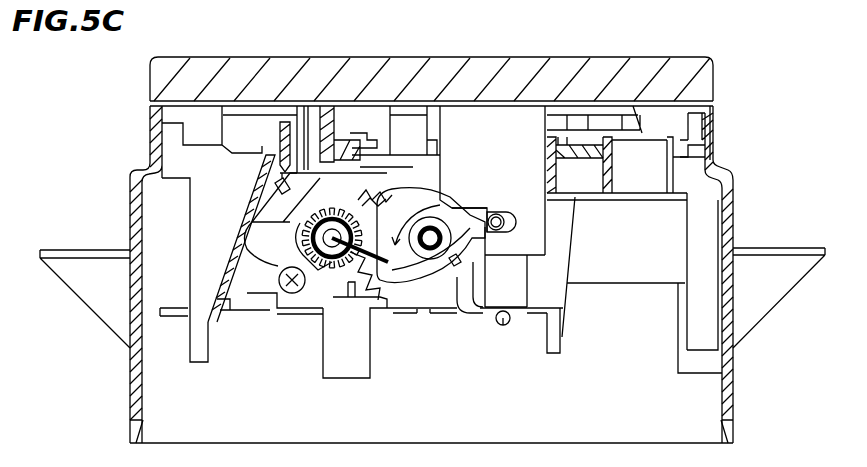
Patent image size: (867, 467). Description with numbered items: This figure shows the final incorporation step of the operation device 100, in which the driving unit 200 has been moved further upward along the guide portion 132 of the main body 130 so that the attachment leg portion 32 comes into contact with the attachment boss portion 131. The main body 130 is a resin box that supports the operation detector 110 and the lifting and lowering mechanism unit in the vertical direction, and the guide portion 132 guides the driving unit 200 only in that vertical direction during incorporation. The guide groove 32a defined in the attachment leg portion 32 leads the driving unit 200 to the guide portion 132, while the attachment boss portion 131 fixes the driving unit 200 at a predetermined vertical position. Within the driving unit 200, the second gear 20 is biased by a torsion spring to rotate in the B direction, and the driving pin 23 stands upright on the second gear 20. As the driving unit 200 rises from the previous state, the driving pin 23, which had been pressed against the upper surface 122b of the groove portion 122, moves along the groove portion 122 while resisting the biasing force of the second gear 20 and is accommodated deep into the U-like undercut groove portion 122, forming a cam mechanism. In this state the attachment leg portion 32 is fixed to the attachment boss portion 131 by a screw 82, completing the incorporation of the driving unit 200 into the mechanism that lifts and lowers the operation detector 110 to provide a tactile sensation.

The operation device 100 is at (721, 34).
The operation detector 110 is at (705, 72).
The main body 130 is at (735, 183).
The second gear 20 is at (403, 208).
The groove portion 122 is at (507, 207).
The upper surface 122b is at (463, 208).
The driving pin 23 is at (510, 220).
The attachment boss portion 131 is at (512, 307).
The driving unit 200 is at (427, 331).
The attachment leg portion 32 is at (168, 320).
The guide groove 32a is at (551, 313).
The screw 82 is at (500, 327).
The guide portion 132 is at (563, 330).